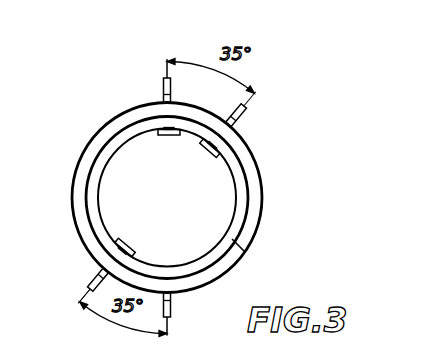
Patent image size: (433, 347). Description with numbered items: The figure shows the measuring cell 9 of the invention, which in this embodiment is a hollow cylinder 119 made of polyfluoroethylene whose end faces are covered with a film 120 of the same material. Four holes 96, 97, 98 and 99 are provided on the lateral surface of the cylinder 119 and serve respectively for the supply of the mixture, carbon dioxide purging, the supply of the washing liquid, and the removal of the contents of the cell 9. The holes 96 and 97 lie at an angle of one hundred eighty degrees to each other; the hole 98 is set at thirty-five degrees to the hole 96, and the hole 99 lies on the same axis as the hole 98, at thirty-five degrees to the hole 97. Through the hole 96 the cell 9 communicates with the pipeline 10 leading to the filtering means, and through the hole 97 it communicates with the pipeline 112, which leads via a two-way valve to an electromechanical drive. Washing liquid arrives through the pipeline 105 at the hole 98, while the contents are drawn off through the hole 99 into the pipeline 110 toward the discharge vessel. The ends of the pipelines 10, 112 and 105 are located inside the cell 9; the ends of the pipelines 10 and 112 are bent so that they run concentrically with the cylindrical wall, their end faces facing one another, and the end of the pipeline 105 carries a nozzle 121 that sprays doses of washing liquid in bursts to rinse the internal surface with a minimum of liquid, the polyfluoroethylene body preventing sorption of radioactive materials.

The measuring cell 9 is at (274, 70).
The pipeline 10 is at (243, 114).
The hole 96 is at (238, 129).
The hole 97 is at (102, 270).
The hole 98 is at (164, 99).
The hole 99 is at (174, 299).
The pipeline 105 is at (164, 86).
The pipeline 110 is at (171, 313).
The pipeline 112 is at (90, 278).
The hollow cylinder 119 is at (262, 201).
The film 120 is at (245, 252).
The nozzle 121 is at (176, 139).